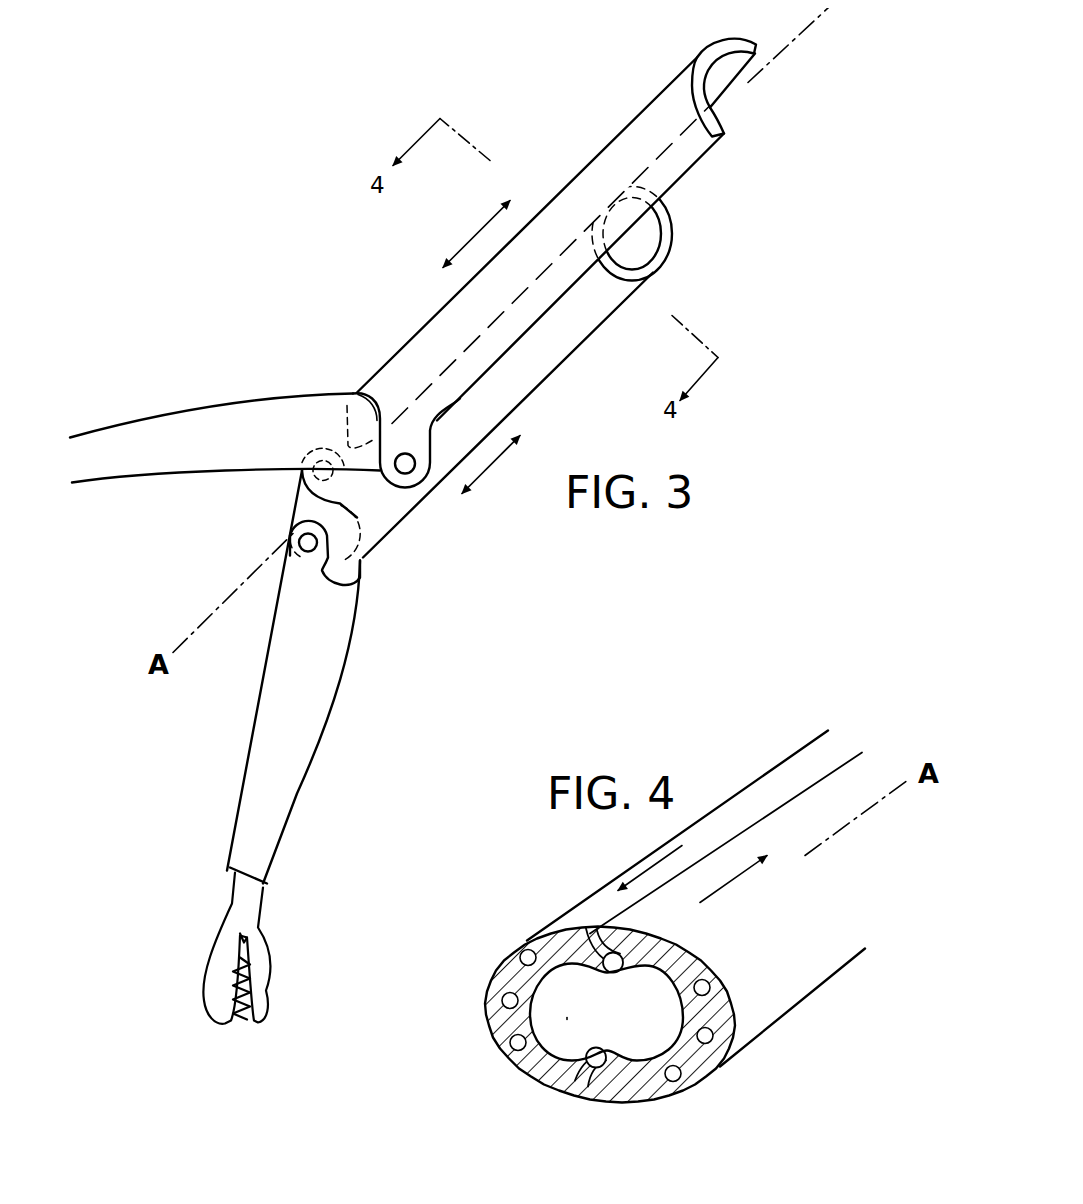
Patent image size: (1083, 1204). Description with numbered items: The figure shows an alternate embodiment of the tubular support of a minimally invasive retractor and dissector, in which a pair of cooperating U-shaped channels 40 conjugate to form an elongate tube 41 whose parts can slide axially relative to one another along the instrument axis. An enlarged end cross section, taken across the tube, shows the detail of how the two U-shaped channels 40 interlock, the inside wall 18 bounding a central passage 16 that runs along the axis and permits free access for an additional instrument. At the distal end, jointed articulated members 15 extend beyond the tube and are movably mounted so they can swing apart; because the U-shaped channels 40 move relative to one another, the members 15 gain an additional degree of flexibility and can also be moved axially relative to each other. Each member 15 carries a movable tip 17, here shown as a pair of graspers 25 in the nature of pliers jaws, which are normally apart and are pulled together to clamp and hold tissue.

In FIG. 3, the jointed articulated member 15 is at (175, 418).
In FIG. 4, the passage 16 is at (567, 1017).
In FIG. 3, the tip 17 is at (268, 968).
In FIG. 4, the inside wall 18 is at (624, 1021).
In FIG. 3, the graspers 25 is at (208, 1003).
In FIG. 3, the U-shaped channel 40 is at (667, 240).
In FIG. 4, the U-shaped channel 40 is at (588, 897).
In FIG. 3, the elongate tube 41 is at (408, 340).